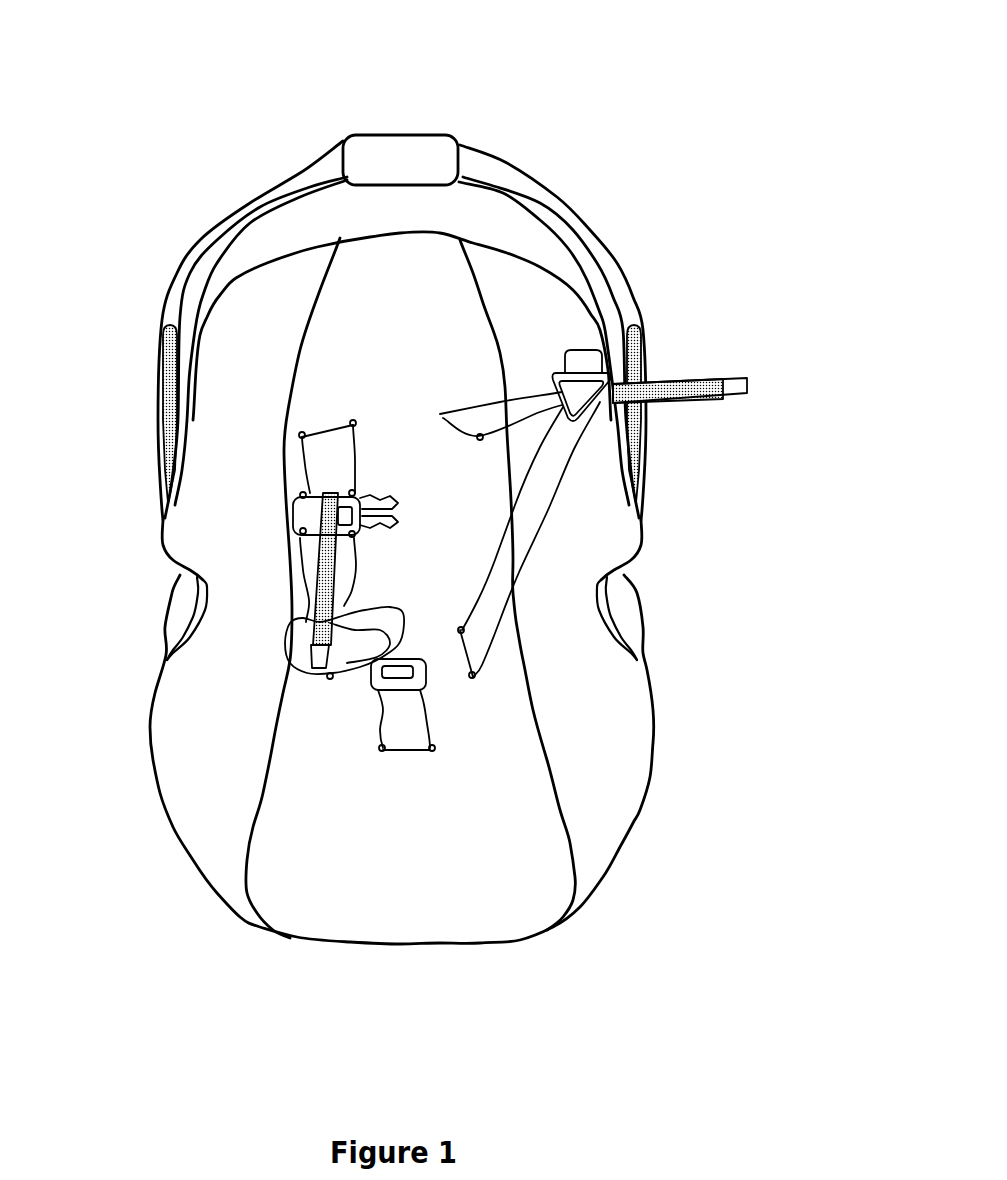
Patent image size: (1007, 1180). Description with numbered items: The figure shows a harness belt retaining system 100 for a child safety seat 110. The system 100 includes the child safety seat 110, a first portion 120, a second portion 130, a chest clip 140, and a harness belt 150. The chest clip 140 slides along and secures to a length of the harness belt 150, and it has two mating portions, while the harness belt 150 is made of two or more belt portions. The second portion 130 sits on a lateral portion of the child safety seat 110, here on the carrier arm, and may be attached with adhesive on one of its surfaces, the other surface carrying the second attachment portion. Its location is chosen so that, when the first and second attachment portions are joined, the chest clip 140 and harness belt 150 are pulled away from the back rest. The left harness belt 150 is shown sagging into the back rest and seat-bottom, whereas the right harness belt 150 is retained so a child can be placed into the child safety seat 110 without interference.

The harness belt retaining system 100 is at (669, 81).
The child safety seat 110 is at (633, 823).
The first portion 120 is at (317, 602).
The second portion 130 is at (163, 365).
The chest clip 140 is at (292, 515).
The harness belt 150 is at (310, 458).